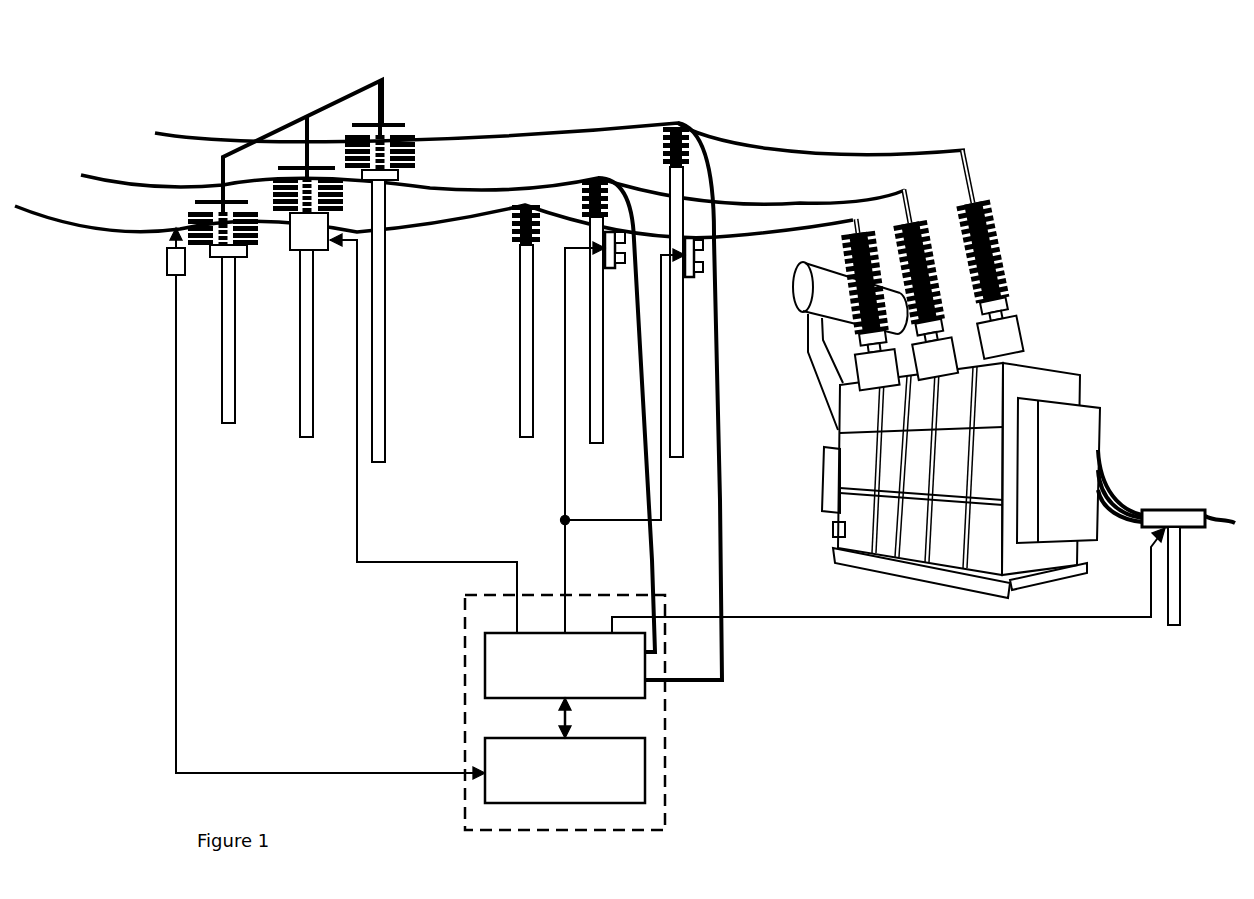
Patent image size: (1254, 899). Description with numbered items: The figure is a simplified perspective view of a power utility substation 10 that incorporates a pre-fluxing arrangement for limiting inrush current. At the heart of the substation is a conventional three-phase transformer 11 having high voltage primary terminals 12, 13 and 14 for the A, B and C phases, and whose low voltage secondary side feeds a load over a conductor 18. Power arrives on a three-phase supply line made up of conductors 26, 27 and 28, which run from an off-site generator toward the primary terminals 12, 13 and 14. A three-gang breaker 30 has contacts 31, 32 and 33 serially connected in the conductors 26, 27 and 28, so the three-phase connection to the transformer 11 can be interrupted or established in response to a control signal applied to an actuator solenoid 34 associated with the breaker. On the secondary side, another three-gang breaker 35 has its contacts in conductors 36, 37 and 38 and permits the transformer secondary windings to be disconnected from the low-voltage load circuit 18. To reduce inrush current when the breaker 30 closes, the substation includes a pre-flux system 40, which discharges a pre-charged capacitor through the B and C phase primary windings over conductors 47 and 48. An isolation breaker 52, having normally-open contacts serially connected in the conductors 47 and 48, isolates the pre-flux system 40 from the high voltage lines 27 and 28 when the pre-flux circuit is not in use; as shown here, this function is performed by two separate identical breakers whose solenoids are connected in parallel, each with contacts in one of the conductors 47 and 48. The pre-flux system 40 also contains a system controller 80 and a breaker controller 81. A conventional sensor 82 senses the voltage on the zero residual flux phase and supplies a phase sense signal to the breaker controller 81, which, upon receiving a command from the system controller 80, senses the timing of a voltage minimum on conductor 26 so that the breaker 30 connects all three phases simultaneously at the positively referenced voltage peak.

The power utility substation 10 is at (1082, 33).
The three-phase transformer 11 is at (1073, 373).
The high voltage primary terminal 12 is at (850, 232).
The high voltage primary terminal 13 is at (907, 200).
The high voltage primary terminal 14 is at (972, 165).
The conductor 18 is at (1237, 532).
The conductor 26 is at (442, 233).
The conductor 27 is at (515, 183).
The conductor 28 is at (537, 131).
The three-gang breaker 30 is at (339, 103).
The contact 31 is at (205, 200).
The contact 32 is at (295, 166).
The contact 33 is at (402, 122).
The actuator solenoid 34 is at (291, 252).
The three-gang breaker 35 is at (1172, 512).
The conductor 36 is at (1110, 520).
The conductor 37 is at (1122, 505).
The conductor 38 is at (1110, 472).
The pre-flux system 40 is at (564, 712).
The conductor 47 is at (653, 545).
The conductor 48 is at (722, 482).
The isolation breaker 52 is at (625, 248).
The system controller 80 is at (483, 677).
The breaker controller 81 is at (483, 788).
The sensor 82 is at (167, 258).